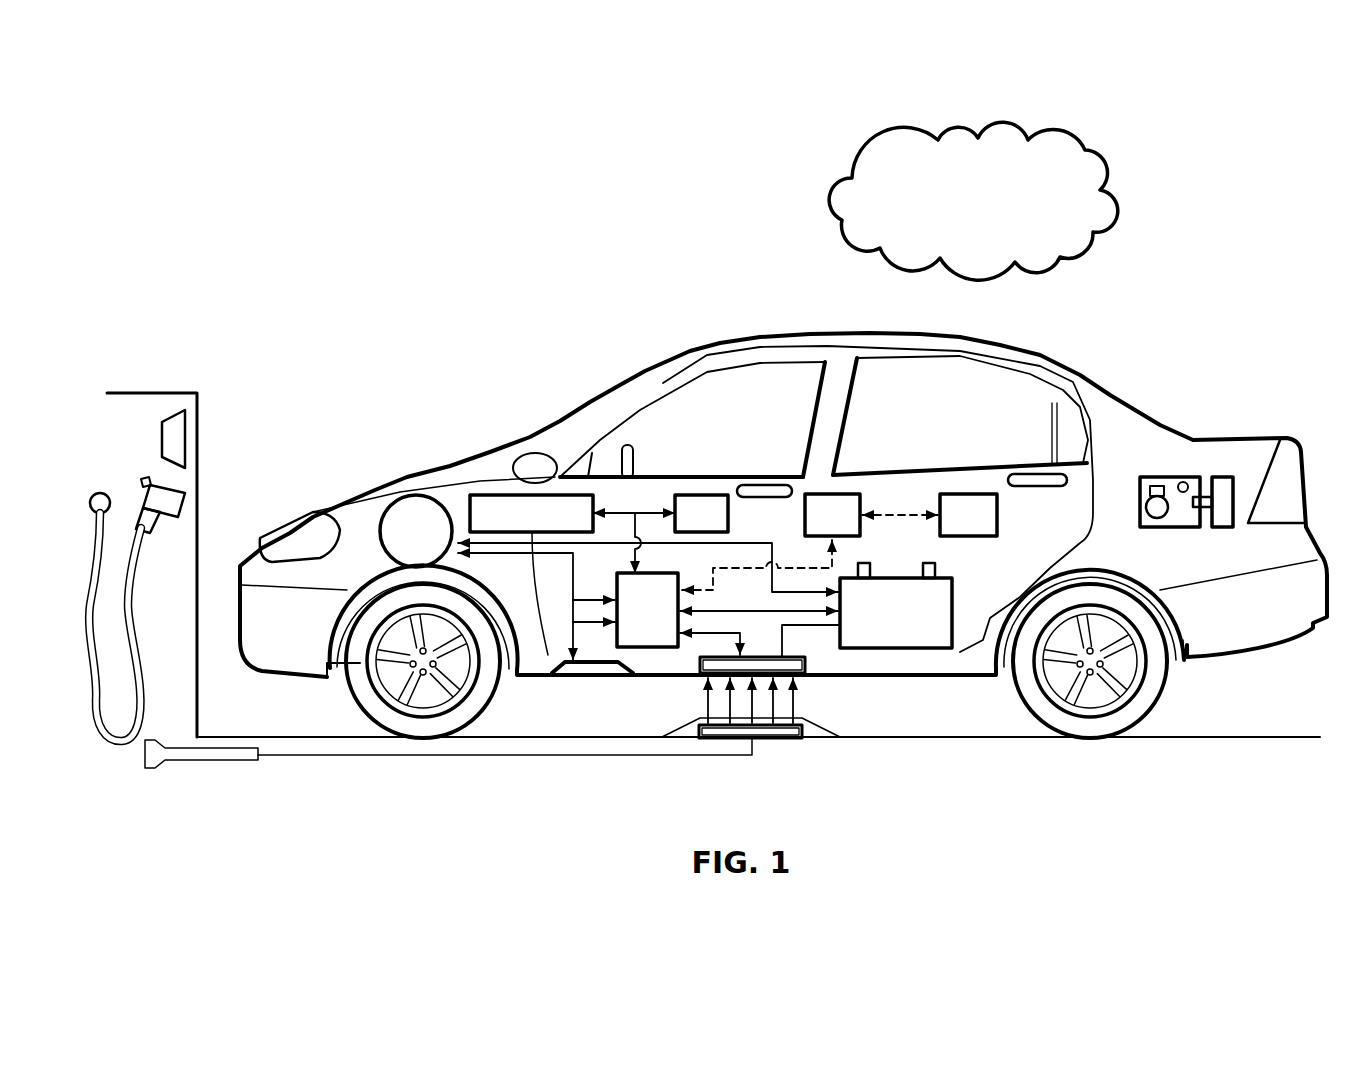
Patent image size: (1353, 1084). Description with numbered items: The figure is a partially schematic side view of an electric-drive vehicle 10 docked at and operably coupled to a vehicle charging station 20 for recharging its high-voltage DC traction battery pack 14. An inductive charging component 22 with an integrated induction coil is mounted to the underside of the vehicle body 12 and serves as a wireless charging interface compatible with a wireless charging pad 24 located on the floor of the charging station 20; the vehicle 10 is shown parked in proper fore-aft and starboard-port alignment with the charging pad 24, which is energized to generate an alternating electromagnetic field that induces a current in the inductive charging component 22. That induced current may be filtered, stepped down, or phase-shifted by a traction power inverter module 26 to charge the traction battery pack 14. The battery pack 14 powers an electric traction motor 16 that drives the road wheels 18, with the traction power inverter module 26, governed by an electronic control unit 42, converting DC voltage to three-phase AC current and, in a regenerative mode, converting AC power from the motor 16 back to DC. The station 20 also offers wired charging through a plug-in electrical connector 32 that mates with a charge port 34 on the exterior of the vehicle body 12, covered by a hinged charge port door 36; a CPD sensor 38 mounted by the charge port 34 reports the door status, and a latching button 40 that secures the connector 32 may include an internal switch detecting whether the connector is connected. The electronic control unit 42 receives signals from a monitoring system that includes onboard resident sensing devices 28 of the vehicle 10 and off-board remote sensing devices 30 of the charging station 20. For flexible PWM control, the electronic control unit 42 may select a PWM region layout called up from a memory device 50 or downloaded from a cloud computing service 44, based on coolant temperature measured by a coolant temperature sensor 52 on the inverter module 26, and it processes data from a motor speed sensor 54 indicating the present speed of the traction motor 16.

The electric-drive vehicle 10 is at (398, 288).
The vehicle body 12 is at (619, 316).
The traction battery pack 14 is at (917, 650).
The electric traction motor 16 is at (393, 497).
The road wheel 18 is at (423, 740).
The vehicle charging station 20 is at (222, 375).
The inductive charging component 22 is at (687, 667).
The wireless charging pad 24 is at (772, 742).
The traction power inverter module 26 is at (634, 621).
The resident sensing device 28 is at (563, 673).
The remote sensing device 30 is at (173, 420).
The electrical connector 32 is at (140, 500).
The charge port 34 is at (1153, 480).
The charge port door 36 is at (1223, 480).
The CPD sensor 38 is at (1177, 480).
The latching button 40 is at (143, 477).
The electronic control unit 42 is at (463, 510).
The cloud computing service 44 is at (962, 209).
The memory device 50 is at (688, 493).
The coolant temperature sensor 52 is at (838, 493).
The motor speed sensor 54 is at (960, 493).